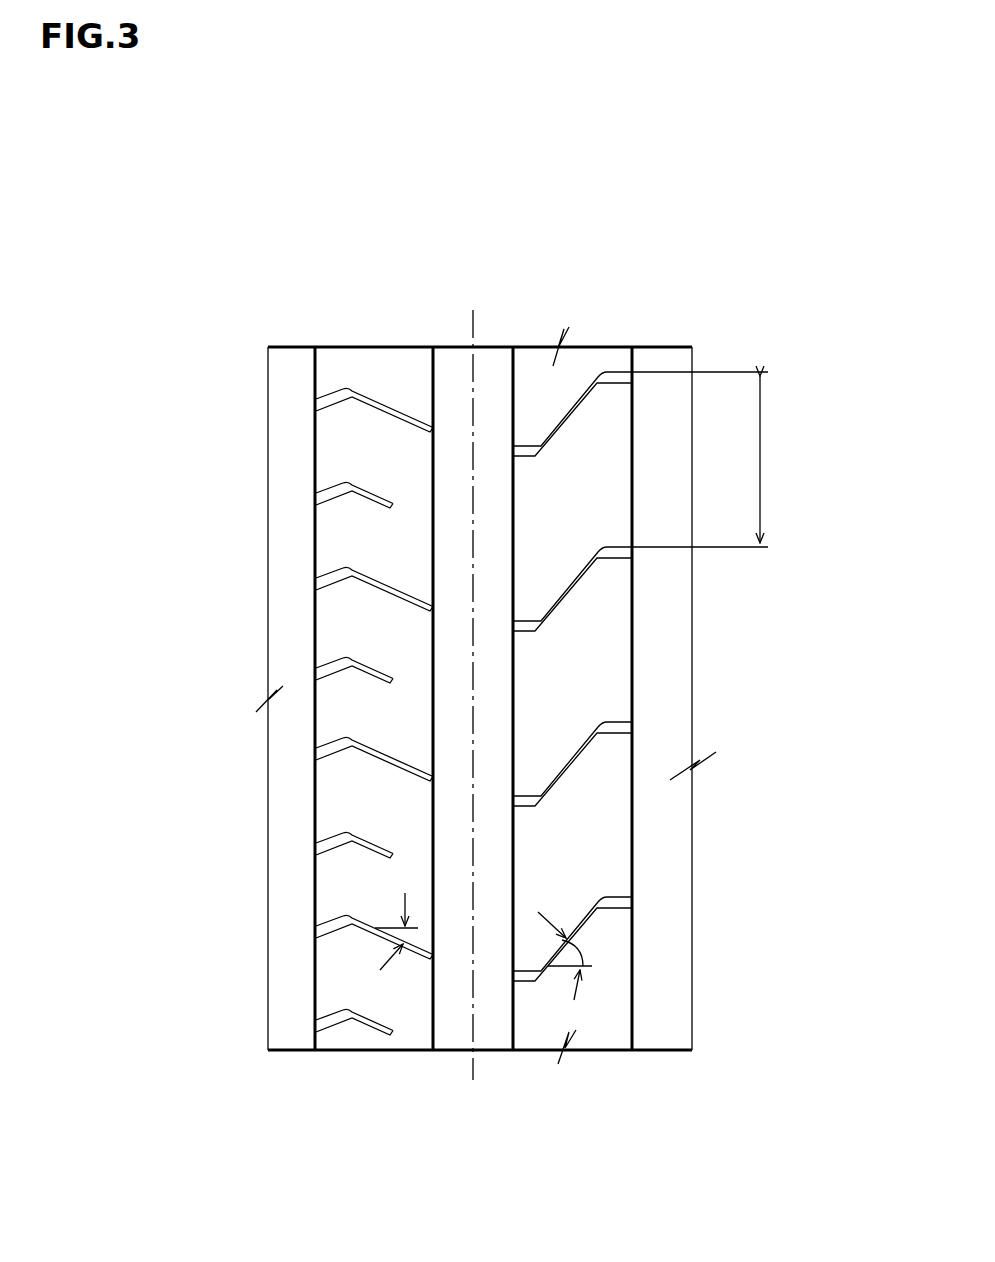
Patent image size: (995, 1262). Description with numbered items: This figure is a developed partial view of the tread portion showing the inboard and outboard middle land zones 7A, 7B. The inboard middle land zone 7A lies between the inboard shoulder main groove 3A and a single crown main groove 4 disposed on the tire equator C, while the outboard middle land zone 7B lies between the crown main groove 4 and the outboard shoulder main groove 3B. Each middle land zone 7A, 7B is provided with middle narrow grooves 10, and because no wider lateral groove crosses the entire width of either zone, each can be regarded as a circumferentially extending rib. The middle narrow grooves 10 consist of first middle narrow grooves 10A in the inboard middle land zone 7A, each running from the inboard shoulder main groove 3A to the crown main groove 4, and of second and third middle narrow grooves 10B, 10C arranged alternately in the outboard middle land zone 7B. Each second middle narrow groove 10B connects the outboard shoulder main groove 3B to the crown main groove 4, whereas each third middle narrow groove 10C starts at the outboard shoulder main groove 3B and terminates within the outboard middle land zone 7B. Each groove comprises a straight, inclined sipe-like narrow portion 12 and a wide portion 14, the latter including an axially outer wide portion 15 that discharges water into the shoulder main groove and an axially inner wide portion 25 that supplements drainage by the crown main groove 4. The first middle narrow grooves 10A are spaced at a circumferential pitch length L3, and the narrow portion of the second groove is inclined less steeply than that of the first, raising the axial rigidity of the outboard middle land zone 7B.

The inboard shoulder main groove 3A is at (663, 366).
The outboard shoulder main groove 3B is at (292, 385).
The crown main groove 4 is at (490, 365).
The inboard middle land zone 7A is at (581, 377).
The outboard middle land zone 7B is at (376, 375).
The middle narrow grooves 10 is at (150, 566).
The first middle narrow grooves 10A is at (598, 380).
The second middle narrow grooves 10B is at (160, 480).
The third middle narrow grooves 10C is at (160, 400).
The sipe-like narrow portion 12 is at (372, 496).
The wide portion 14 is at (327, 665).
The axially outer wide portion 15 is at (325, 488).
The axially inner wide portion 25 is at (437, 953).
The tire equator C is at (472, 679).
The circumferential pitch length L3 is at (716, 459).